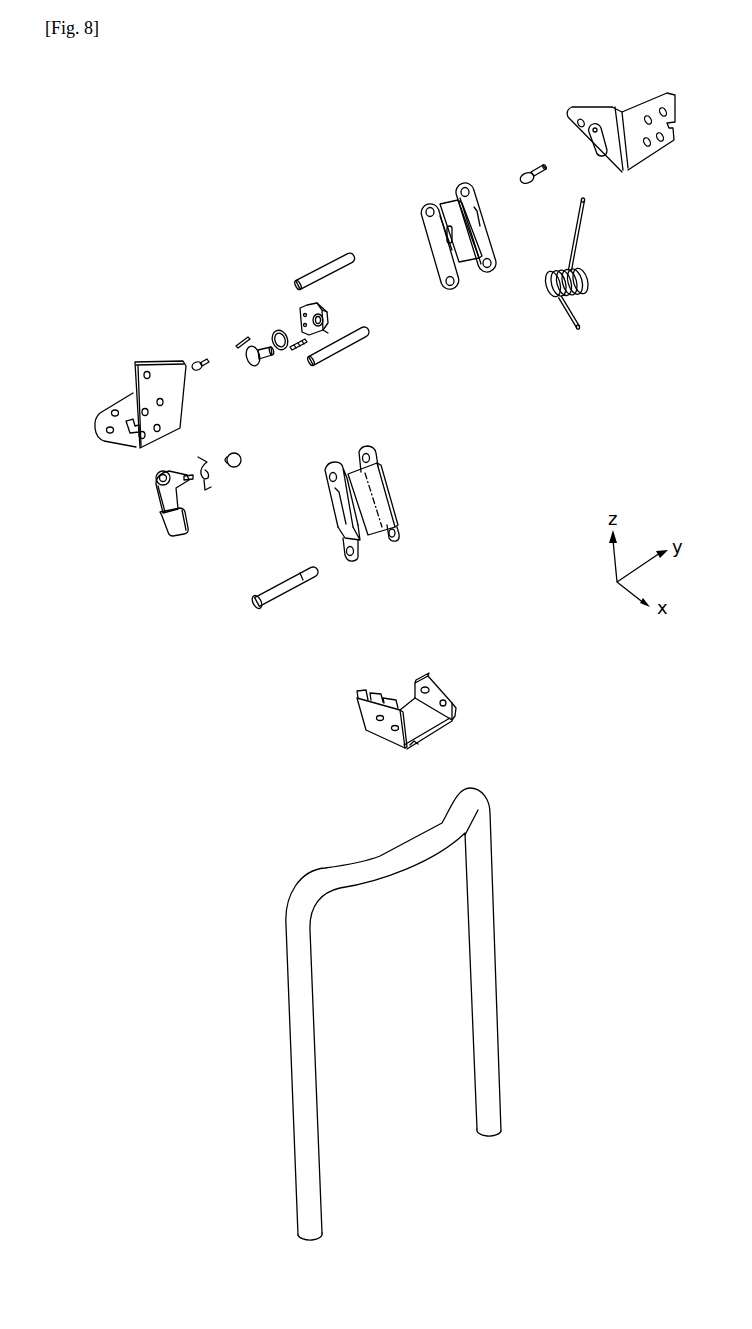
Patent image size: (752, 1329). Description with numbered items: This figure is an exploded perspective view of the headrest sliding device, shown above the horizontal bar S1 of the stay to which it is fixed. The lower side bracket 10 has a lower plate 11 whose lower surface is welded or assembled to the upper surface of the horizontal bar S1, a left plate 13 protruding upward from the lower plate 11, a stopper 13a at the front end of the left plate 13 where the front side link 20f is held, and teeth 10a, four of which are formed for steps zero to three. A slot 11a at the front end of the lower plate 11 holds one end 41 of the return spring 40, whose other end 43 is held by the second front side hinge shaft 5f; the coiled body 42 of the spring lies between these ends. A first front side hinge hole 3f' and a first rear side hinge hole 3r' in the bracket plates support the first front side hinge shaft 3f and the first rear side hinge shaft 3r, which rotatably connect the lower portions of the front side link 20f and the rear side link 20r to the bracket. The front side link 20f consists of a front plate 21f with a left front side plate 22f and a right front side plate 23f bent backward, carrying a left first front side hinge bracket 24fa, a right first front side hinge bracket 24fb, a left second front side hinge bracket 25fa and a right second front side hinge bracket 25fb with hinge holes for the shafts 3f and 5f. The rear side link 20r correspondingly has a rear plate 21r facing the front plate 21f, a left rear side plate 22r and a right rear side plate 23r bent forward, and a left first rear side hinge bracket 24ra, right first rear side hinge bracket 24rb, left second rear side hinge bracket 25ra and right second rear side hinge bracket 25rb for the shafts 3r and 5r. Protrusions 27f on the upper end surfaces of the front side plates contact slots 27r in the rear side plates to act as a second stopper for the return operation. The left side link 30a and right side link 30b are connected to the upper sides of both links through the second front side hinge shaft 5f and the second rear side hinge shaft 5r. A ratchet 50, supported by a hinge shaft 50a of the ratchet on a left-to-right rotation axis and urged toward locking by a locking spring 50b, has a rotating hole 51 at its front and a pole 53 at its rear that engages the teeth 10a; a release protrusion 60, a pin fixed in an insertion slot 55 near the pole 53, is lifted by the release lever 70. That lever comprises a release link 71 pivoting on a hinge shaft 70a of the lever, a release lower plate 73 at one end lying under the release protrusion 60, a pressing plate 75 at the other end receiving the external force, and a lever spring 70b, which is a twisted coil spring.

The lower side bracket 10 is at (413, 708).
The teeth 10a is at (397, 703).
The lower plate 11 is at (436, 740).
The slot 11a is at (416, 746).
The left plate 13 is at (385, 732).
The stopper 13a is at (456, 712).
The first rear side hinge hole 3r' is at (365, 685).
The first front side hinge hole 3f' is at (362, 758).
The first rear side hinge shaft 3r is at (351, 356).
The first front side hinge shaft 3f is at (359, 637).
The second rear side hinge shaft 5r is at (305, 277).
The second front side hinge shaft 5f is at (527, 170).
The rear side link 20r is at (455, 220).
The rear plate 21r is at (440, 204).
The left rear side plate 22r is at (481, 238).
The right rear side plate 23r is at (441, 255).
The left first rear side hinge bracket 24ra is at (491, 268).
The right first rear side hinge bracket 24rb is at (449, 287).
The left second rear side hinge bracket 25ra is at (466, 187).
The right second rear side hinge bracket 25rb is at (426, 209).
The slots 27r is at (479, 213).
The front side link 20f is at (379, 512).
The front plate 21f is at (370, 500).
The left front side plate 22f is at (378, 482).
The right front side plate 23f is at (340, 508).
The left first front side hinge bracket 24fa is at (395, 541).
The right first front side hinge bracket 24fb is at (352, 564).
The left second front side hinge bracket 25fa is at (368, 447).
The right second front side hinge bracket 25fb is at (330, 469).
The protrusions 27f is at (331, 492).
The left side link 30a is at (633, 107).
The right side link 30b is at (122, 403).
The return spring 40 is at (608, 278).
The one end of the return spring 41 is at (580, 329).
The spring coil 42 is at (586, 270).
The other end of the return spring 43 is at (585, 217).
The ratchet 50 is at (310, 318).
The hinge shaft of the ratchet 50a is at (258, 366).
The locking spring 50b is at (284, 351).
The rotating hole 51 is at (325, 305).
The pole 53 is at (338, 331).
The insertion slot 55 is at (302, 328).
The release protrusion 60 is at (238, 338).
The release lever 70 is at (183, 479).
The hinge shaft of the lever 70a is at (239, 467).
The lever spring 70b is at (203, 458).
The release link 71 is at (156, 483).
The release lower plate 73 is at (190, 481).
The pressing plate 75 is at (170, 525).
The horizontal bar S1 is at (410, 856).